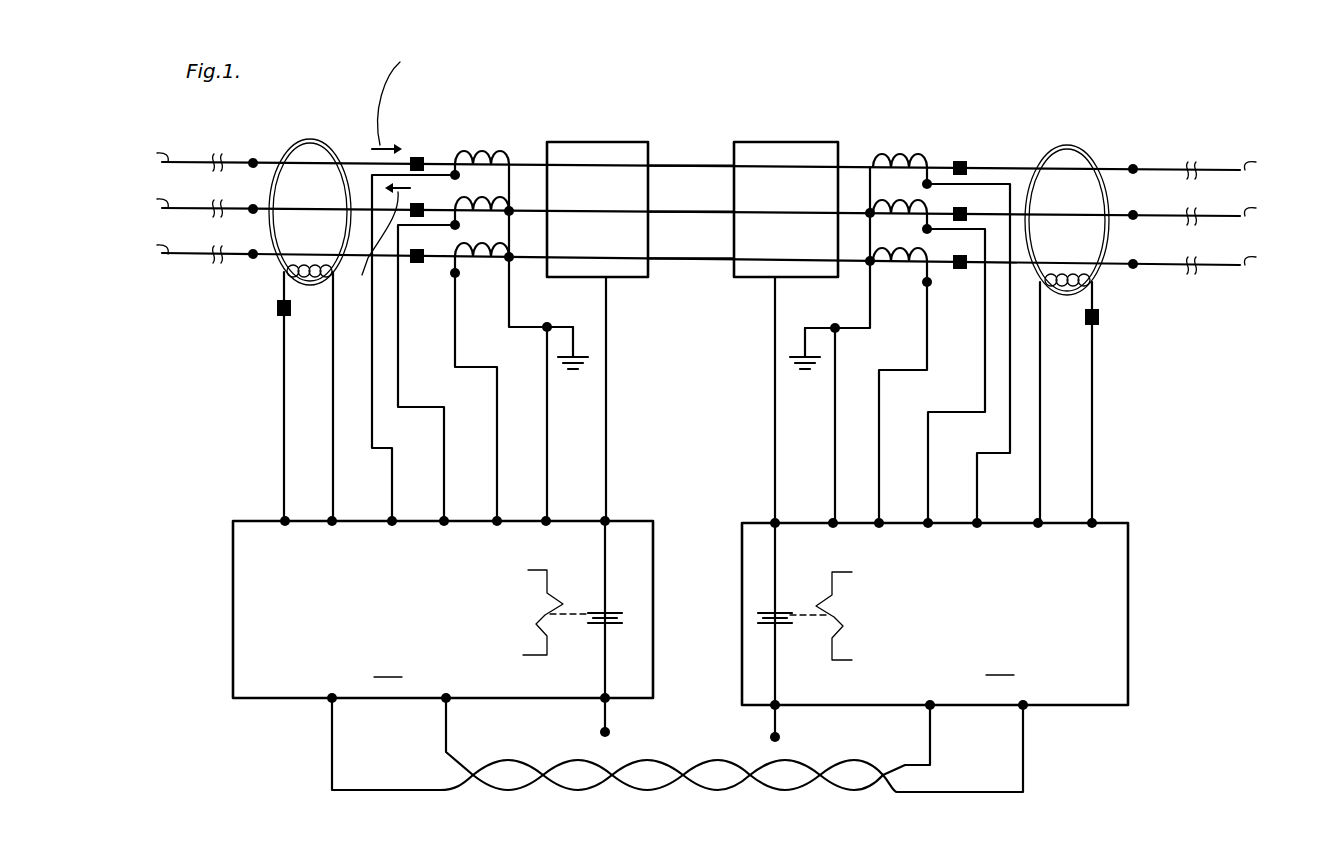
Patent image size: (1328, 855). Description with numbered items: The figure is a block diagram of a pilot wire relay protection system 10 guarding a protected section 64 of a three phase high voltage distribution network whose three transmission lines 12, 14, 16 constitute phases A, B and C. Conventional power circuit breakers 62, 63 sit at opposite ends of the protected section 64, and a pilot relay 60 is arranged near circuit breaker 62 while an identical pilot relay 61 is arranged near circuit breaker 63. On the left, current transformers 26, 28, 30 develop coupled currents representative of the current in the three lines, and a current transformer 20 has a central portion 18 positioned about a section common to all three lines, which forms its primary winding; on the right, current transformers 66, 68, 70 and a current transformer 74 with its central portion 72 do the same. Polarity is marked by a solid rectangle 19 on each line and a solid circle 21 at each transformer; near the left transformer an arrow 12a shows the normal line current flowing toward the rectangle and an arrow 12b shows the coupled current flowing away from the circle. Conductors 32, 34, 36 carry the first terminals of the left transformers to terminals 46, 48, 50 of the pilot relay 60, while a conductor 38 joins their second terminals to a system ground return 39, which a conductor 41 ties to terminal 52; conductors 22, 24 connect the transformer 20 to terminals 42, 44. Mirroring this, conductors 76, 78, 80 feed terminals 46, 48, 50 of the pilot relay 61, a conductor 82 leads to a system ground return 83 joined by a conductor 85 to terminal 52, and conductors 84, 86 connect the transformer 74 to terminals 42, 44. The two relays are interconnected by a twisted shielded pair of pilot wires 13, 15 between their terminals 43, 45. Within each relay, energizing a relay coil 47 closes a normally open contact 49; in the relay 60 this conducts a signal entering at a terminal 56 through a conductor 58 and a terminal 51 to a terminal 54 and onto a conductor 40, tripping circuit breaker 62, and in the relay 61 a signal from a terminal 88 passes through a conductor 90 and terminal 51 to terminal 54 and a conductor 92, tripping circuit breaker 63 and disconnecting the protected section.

The pilot wire relay protection system 10 is at (1093, 87).
The transmission line 12 is at (240, 163).
The transmission line 14 is at (240, 208).
The transmission line 16 is at (240, 253).
The arrow 12a is at (405, 95).
The arrow 12b is at (373, 244).
The central portion 18 is at (313, 185).
The solid rectangle 19 is at (417, 156).
The current sensor 20 is at (290, 270).
The solid circle 21 is at (455, 170).
The conductor 22 is at (283, 425).
The conductor 24 is at (333, 440).
The current sensor 26 is at (508, 149).
The current sensor 28 is at (509, 200).
The current sensor 30 is at (510, 250).
The conductor 32 is at (373, 438).
The conductor 34 is at (399, 340).
The conductor 36 is at (455, 328).
The conductor 38 is at (511, 303).
The system ground return 39 is at (585, 346).
The conductor 40 is at (608, 375).
The conductor 41 is at (548, 412).
The terminal 42 is at (285, 527).
The terminal 44 is at (333, 527).
The terminal 46 is at (393, 527).
The terminal 48 is at (445, 527).
The terminal 50 is at (498, 527).
The terminal 52 is at (547, 527).
The terminal 54 is at (604, 519).
The relay coil 47 is at (545, 608).
The normally open contact 49 is at (622, 622).
The terminal 43 is at (335, 702).
The terminal 45 is at (447, 702).
The terminal 51 is at (602, 702).
The terminal 56 is at (606, 735).
The conductor 58 is at (612, 715).
The pilot relay 60 is at (653, 523).
The pilot relay 61 is at (1128, 525).
The power circuit breaker 62 is at (610, 261).
The power circuit breaker 63 is at (799, 261).
The protected section 64 is at (691, 151).
The current sensor 66 is at (898, 140).
The current sensor 68 is at (872, 200).
The current sensor 70 is at (871, 248).
The central portion 72 is at (1070, 195).
The current sensor 74 is at (1093, 285).
The conductor 76 is at (1008, 439).
The conductor 78 is at (984, 389).
The conductor 80 is at (925, 353).
The conductor 82 is at (869, 306).
The system ground return 83 is at (797, 346).
The conductor 84 is at (1093, 386).
The conductor 85 is at (834, 413).
The conductor 86 is at (1041, 391).
The terminal 88 is at (774, 740).
The conductor 90 is at (773, 708).
The conductor 92 is at (774, 390).
The pilot wire 13 is at (598, 788).
The pilot wire 15 is at (498, 788).